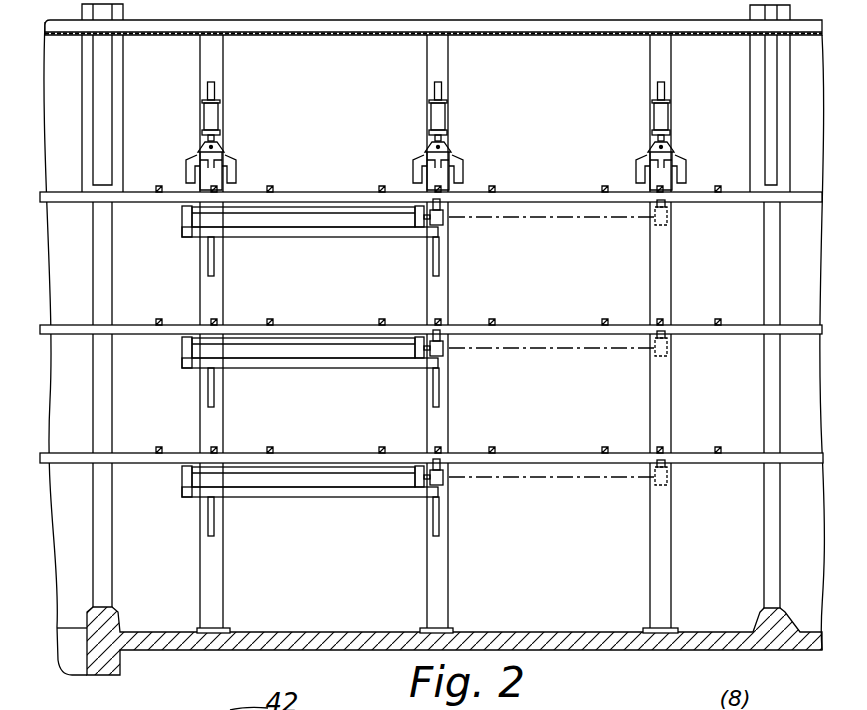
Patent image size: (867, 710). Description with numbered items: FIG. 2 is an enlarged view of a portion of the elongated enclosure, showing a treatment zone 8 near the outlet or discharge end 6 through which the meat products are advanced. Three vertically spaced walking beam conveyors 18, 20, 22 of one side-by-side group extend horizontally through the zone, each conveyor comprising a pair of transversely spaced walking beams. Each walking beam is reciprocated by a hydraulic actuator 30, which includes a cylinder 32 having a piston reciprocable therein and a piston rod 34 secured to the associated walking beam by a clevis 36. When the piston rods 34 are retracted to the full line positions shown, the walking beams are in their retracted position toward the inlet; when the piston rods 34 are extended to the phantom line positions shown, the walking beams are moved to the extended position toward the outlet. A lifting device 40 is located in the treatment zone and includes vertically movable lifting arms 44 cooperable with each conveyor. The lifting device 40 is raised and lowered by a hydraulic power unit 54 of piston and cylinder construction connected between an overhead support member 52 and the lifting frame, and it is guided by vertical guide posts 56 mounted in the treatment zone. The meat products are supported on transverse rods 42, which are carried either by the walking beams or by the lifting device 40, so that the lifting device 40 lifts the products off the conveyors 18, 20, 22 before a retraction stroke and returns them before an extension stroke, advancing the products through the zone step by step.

The outlet or discharge end 6 is at (65, 596).
The treatment zone 8 is at (348, 56).
The walking beam conveyor 18 is at (337, 190).
The walking beam conveyor 20 is at (300, 321).
The walking beam conveyor 22 is at (314, 452).
The hydraulic actuator 30 is at (300, 228).
The cylinder 32 is at (355, 216).
The piston rod 34 is at (423, 223).
The clevis 36 is at (441, 203).
The lifting device 40 is at (244, 151).
The transverse rod 42 is at (210, 188).
The lifting arm 44 is at (125, 305).
The overhead support member 52 is at (218, 101).
The hydraulic power unit 54 is at (206, 117).
The vertical guide post 56 is at (221, 618).